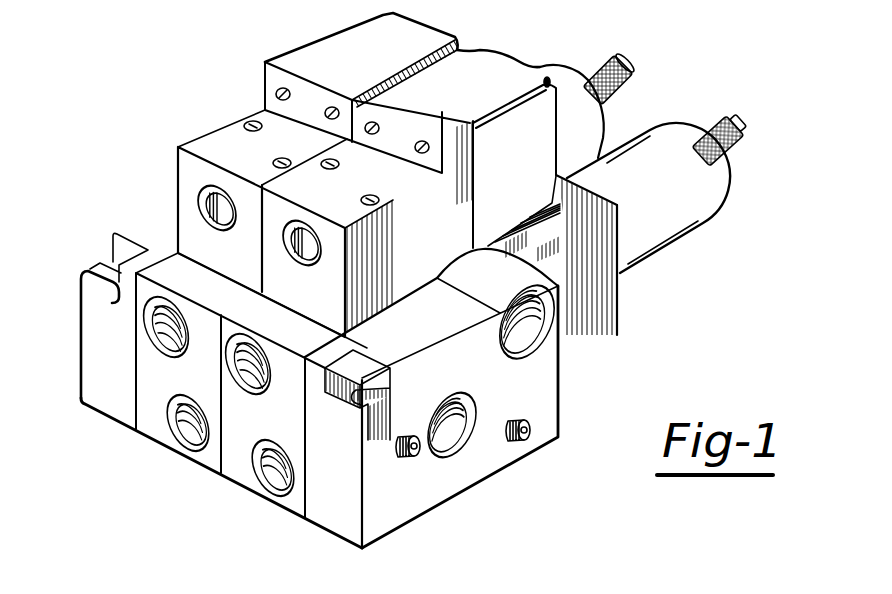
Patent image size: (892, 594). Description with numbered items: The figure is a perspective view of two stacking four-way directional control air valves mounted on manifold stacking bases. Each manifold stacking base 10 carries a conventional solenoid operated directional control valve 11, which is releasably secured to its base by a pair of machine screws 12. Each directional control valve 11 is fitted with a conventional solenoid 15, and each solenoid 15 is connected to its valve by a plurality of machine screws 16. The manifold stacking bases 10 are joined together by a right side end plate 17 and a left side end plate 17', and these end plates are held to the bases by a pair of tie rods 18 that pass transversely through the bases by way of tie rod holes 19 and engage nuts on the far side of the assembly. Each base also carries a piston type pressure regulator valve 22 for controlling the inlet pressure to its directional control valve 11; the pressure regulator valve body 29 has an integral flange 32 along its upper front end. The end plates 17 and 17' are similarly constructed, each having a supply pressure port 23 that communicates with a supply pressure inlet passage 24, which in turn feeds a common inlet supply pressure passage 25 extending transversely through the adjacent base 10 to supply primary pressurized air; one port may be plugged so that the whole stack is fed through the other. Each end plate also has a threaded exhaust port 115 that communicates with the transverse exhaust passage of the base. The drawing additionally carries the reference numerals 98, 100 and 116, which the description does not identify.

The manifold stacking base 10 is at (200, 484).
The solenoid operated directional control valve 11 is at (221, 120).
The machine screws 12 is at (277, 162).
The solenoid 15 is at (359, 23).
The machine screws 16 is at (330, 108).
The right side end plate 17 is at (321, 487).
The left side end plate 17' is at (89, 348).
The tie rods 18 is at (407, 453).
The tie rod holes 19 is at (757, 108).
The piston type pressure regulator valve 22 is at (609, 128).
The supply pressure port 23 is at (470, 450).
The supply pressure inlet passage 24 is at (446, 410).
The common inlet supply pressure passage 25 is at (564, 511).
The pressure regulator valve body 29 is at (616, 332).
The integral flange 32 is at (520, 228).
The port 98 is at (177, 354).
The port 100 is at (172, 434).
The threaded exhaust port 115 is at (534, 345).
The threaded bore 116 is at (513, 308).